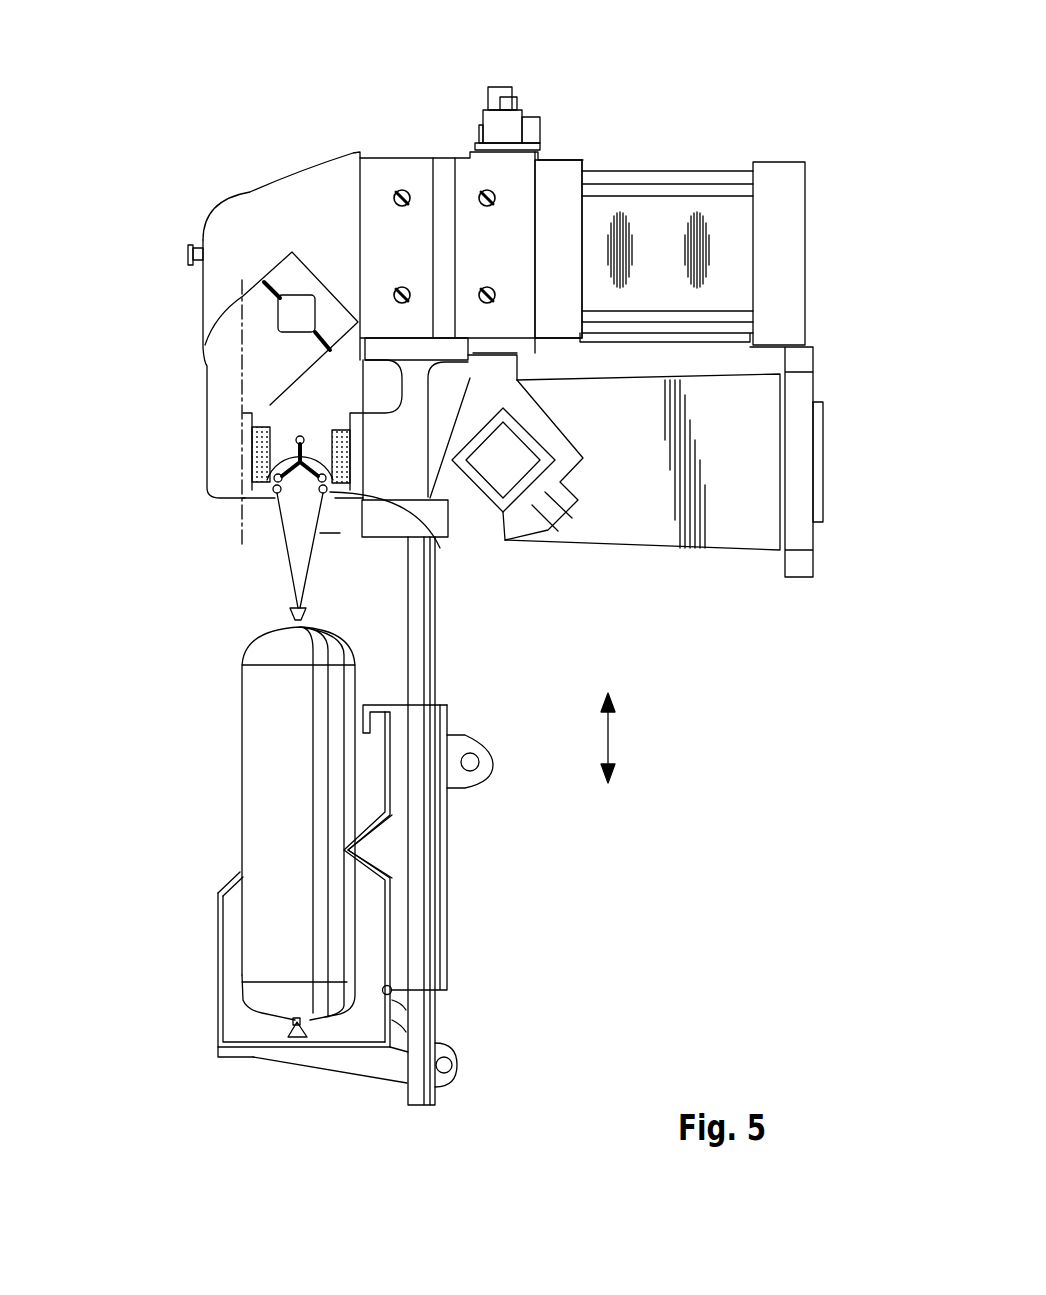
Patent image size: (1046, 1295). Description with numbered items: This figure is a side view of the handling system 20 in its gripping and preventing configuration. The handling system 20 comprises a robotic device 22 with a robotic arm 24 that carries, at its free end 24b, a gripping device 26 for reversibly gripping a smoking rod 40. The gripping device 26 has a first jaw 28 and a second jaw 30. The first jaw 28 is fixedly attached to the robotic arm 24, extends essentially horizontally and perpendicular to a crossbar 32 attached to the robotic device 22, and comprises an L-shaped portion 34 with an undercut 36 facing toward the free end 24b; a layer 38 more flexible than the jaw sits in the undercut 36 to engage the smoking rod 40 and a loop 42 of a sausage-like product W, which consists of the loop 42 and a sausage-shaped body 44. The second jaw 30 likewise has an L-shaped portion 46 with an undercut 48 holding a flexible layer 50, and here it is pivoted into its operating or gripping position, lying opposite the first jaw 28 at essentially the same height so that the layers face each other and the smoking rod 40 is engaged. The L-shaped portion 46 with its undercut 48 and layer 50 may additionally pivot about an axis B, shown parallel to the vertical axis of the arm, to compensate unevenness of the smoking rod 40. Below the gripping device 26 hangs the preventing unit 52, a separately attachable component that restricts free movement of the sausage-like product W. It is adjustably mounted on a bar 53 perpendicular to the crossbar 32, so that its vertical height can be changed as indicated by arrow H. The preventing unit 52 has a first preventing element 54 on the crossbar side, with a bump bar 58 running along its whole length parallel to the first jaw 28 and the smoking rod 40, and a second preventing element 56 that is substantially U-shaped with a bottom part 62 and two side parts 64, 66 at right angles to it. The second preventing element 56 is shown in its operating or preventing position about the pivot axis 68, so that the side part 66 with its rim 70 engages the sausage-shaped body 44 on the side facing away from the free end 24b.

The handling system 20 is at (170, 134).
The robotic device 22 is at (738, 135).
The robotic arm 24 is at (670, 172).
The free end 24b is at (483, 110).
The gripping device 26 is at (187, 232).
The first jaw 28 is at (355, 468).
The second jaw 30 is at (225, 363).
The crossbar 32 is at (548, 530).
The L-shaped portion 34 is at (362, 520).
The undercut 36 is at (440, 548).
The layer 38 is at (340, 428).
The smoking rod 40 is at (297, 490).
The loop 42 is at (290, 607).
The sausage-shaped body 44 is at (268, 740).
The L-shaped portion 46 is at (252, 432).
The undercut 48 is at (273, 488).
The layer 50 is at (262, 462).
The preventing unit 52 is at (545, 921).
The bar 53 is at (422, 622).
The first preventing element 54 is at (405, 893).
The second preventing element 56 is at (326, 1095).
The bump bar 58 is at (378, 836).
The bottom part 62 is at (255, 1058).
The side part 64 is at (395, 1032).
The side part 66 is at (222, 960).
The pivot axis 68 is at (392, 992).
The rim 70 is at (240, 872).
The axis B is at (242, 282).
The arrow H is at (615, 738).
The sausage-like product W is at (172, 585).